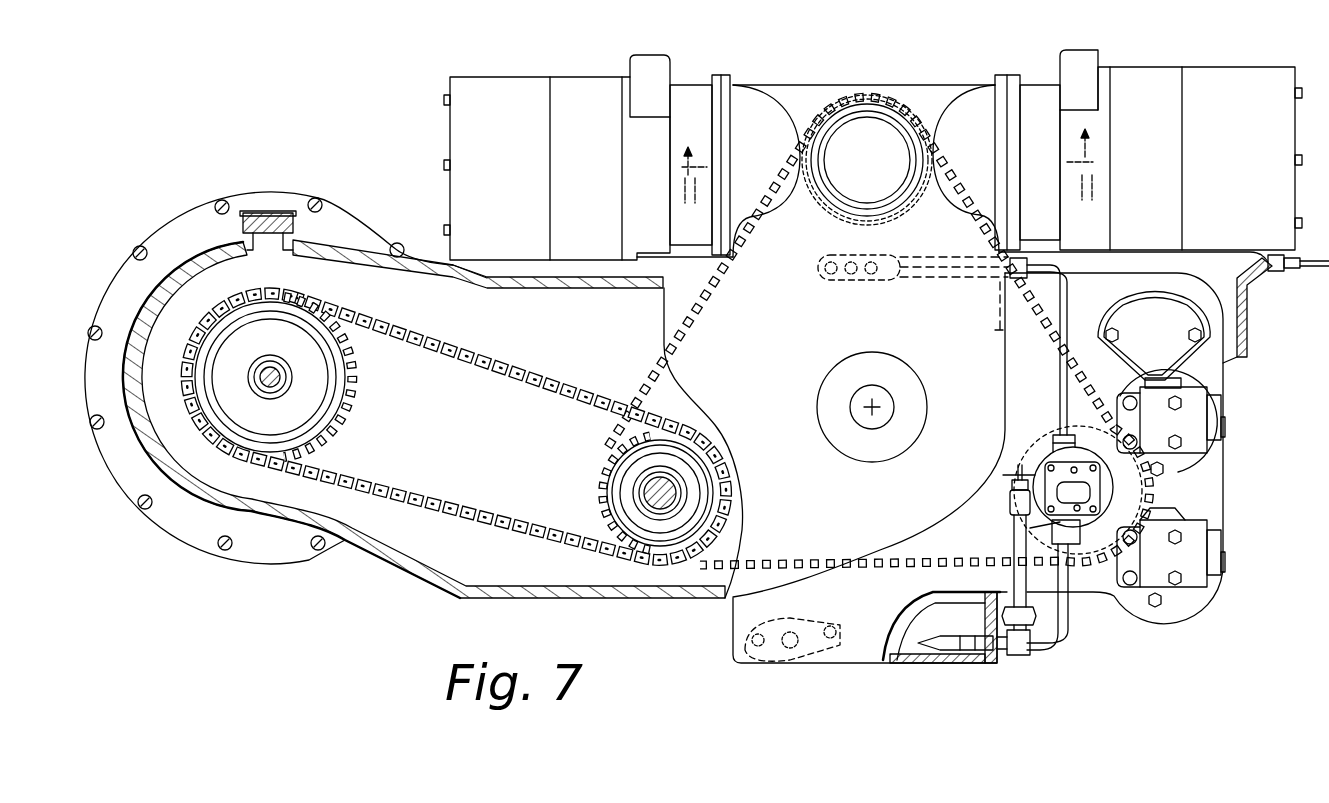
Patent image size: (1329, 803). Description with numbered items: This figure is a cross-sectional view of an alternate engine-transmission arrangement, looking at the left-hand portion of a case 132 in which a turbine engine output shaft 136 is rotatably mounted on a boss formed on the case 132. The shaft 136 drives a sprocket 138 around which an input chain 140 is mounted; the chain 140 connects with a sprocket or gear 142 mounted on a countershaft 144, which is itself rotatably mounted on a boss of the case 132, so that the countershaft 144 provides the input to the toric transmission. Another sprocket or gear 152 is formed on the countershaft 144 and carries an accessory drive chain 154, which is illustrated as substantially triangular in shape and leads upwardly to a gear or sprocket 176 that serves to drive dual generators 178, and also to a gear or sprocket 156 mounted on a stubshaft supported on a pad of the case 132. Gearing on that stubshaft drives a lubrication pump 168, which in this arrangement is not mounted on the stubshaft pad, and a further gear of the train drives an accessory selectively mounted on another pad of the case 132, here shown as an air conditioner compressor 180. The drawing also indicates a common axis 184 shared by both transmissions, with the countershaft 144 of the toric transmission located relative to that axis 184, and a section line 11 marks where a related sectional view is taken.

The section line 11- 11 is at (889, 177).
The case 132 is at (382, 567).
The turbine engine output shaft 136 is at (280, 393).
The sprocket 138 is at (353, 372).
The input chain 140 is at (522, 370).
The sprocket or gear 142 is at (597, 462).
The countershaft 144 is at (683, 495).
The sprocket or gear 152 is at (620, 432).
The accessory drive chain 154 is at (668, 373).
The gear or sprocket 156 is at (1047, 445).
The lubrication pump 168 is at (1107, 480).
The gear or sprocket 176 is at (870, 222).
The dual generators 178 is at (924, 120).
The air conditioner compressor 180 is at (1197, 405).
The common axis 184 is at (878, 405).